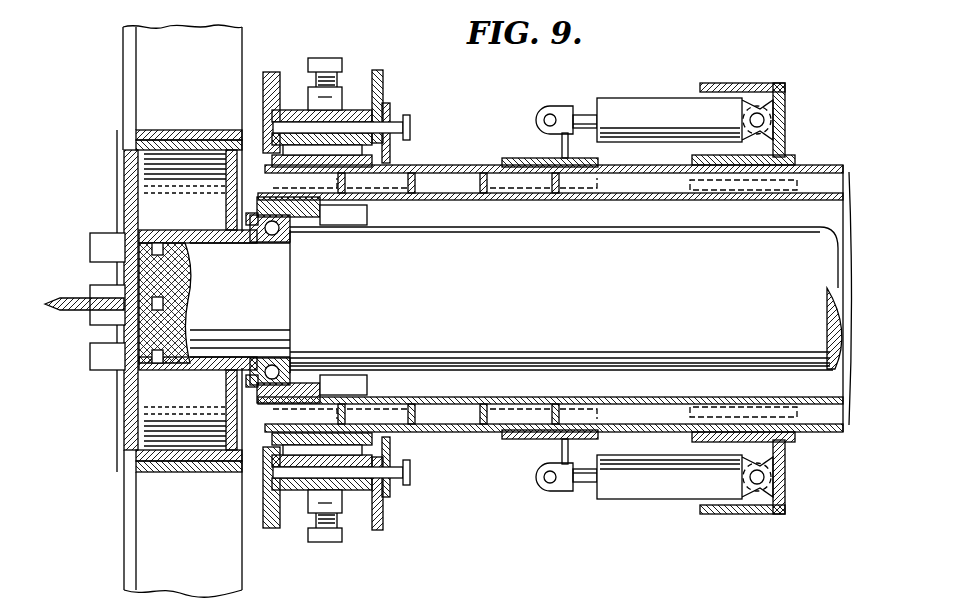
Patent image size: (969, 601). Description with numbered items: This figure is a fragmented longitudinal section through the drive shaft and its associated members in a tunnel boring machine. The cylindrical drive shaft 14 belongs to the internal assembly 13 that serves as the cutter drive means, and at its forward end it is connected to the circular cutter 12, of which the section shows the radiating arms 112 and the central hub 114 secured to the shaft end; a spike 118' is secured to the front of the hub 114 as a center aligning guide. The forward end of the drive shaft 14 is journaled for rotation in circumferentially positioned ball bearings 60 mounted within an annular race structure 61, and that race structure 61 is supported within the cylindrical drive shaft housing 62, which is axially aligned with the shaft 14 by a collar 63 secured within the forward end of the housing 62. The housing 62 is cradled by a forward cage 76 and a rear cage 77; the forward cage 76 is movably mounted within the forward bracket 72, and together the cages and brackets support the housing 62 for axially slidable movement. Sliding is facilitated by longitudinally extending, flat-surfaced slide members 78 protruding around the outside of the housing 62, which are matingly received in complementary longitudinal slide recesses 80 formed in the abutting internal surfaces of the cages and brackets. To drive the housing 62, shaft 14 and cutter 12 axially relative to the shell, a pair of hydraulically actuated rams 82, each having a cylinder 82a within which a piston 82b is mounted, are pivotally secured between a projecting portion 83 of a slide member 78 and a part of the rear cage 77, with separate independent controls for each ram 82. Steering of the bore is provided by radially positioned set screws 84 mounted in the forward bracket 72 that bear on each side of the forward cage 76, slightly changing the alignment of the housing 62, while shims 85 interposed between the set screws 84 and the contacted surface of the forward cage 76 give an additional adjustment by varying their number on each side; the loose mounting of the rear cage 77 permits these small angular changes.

The circular cutter 12 is at (122, 89).
The internal assembly 13 is at (829, 164).
The drive shaft 14 is at (490, 300).
The ball bearings 60 is at (272, 240).
The annular race structure 61 is at (292, 238).
The drive shaft housing 62 is at (408, 200).
The collar 63 is at (325, 218).
The forward bracket 72 is at (382, 76).
The forward cage 76 is at (392, 151).
The rear cage 77 is at (788, 105).
The slide member 78 is at (462, 168).
The slide recess 80 is at (293, 168).
The hydraulically actuated ram 82 is at (654, 298).
The cylinder 82a is at (628, 98).
The piston 82b is at (583, 110).
The projecting portion 83 is at (518, 158).
The set screw 84 is at (326, 58).
The shim 85 is at (410, 118).
The arm 112 is at (200, 536).
The central hub 114 is at (138, 436).
The spike 118' is at (77, 301).